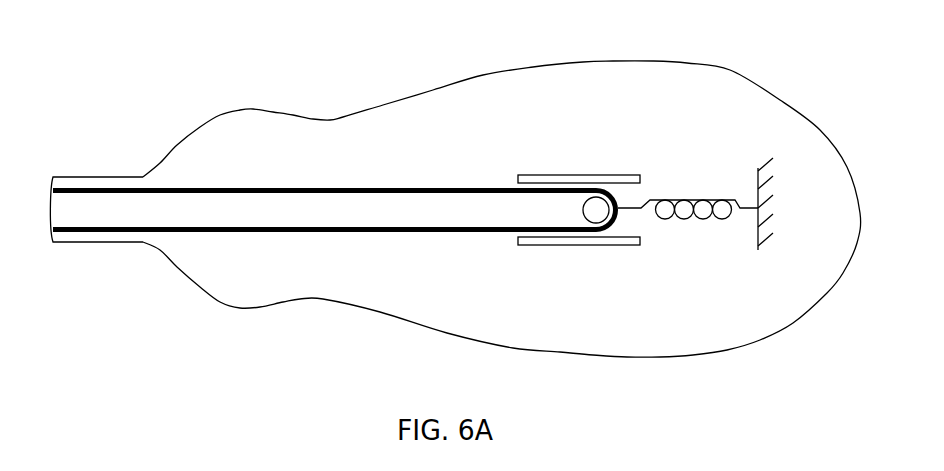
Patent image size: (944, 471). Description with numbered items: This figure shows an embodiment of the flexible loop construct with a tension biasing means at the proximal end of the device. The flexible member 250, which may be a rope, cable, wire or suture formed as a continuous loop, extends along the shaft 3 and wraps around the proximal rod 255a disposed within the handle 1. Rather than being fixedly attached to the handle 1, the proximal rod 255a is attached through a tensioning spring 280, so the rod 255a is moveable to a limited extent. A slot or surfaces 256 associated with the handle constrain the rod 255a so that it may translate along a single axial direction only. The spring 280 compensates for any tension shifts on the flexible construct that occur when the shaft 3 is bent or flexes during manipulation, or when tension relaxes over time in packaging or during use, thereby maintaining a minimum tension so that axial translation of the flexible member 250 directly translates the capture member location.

The handle 1 is at (730, 70).
The shaft 3 is at (73, 242).
The flexible member 250 is at (410, 188).
The proximal rod 255a is at (598, 206).
The slot or surfaces 256 is at (583, 175).
The tensioning spring 280 is at (697, 200).